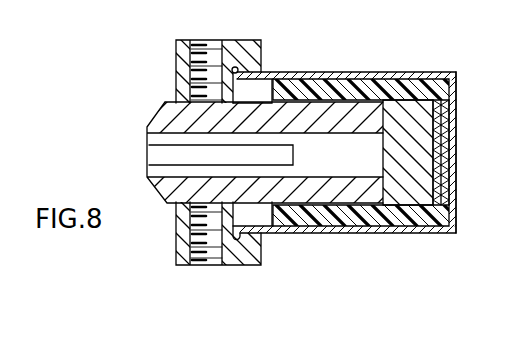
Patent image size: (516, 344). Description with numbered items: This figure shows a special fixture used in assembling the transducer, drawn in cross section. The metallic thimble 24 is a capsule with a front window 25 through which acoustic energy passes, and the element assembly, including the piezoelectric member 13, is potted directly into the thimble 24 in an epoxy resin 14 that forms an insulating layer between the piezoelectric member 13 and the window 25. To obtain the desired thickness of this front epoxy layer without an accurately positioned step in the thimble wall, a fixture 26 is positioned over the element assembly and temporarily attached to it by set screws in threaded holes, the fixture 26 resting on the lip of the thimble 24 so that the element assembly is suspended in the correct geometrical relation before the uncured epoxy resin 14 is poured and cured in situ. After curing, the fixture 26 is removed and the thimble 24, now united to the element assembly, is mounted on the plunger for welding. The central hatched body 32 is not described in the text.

The piezoelectric member 13 is at (438, 170).
The epoxy resin 14 is at (353, 86).
The thimble 24 is at (418, 74).
The window 25 is at (457, 122).
The fixture 26 is at (183, 62).
The connector body 32 is at (310, 108).